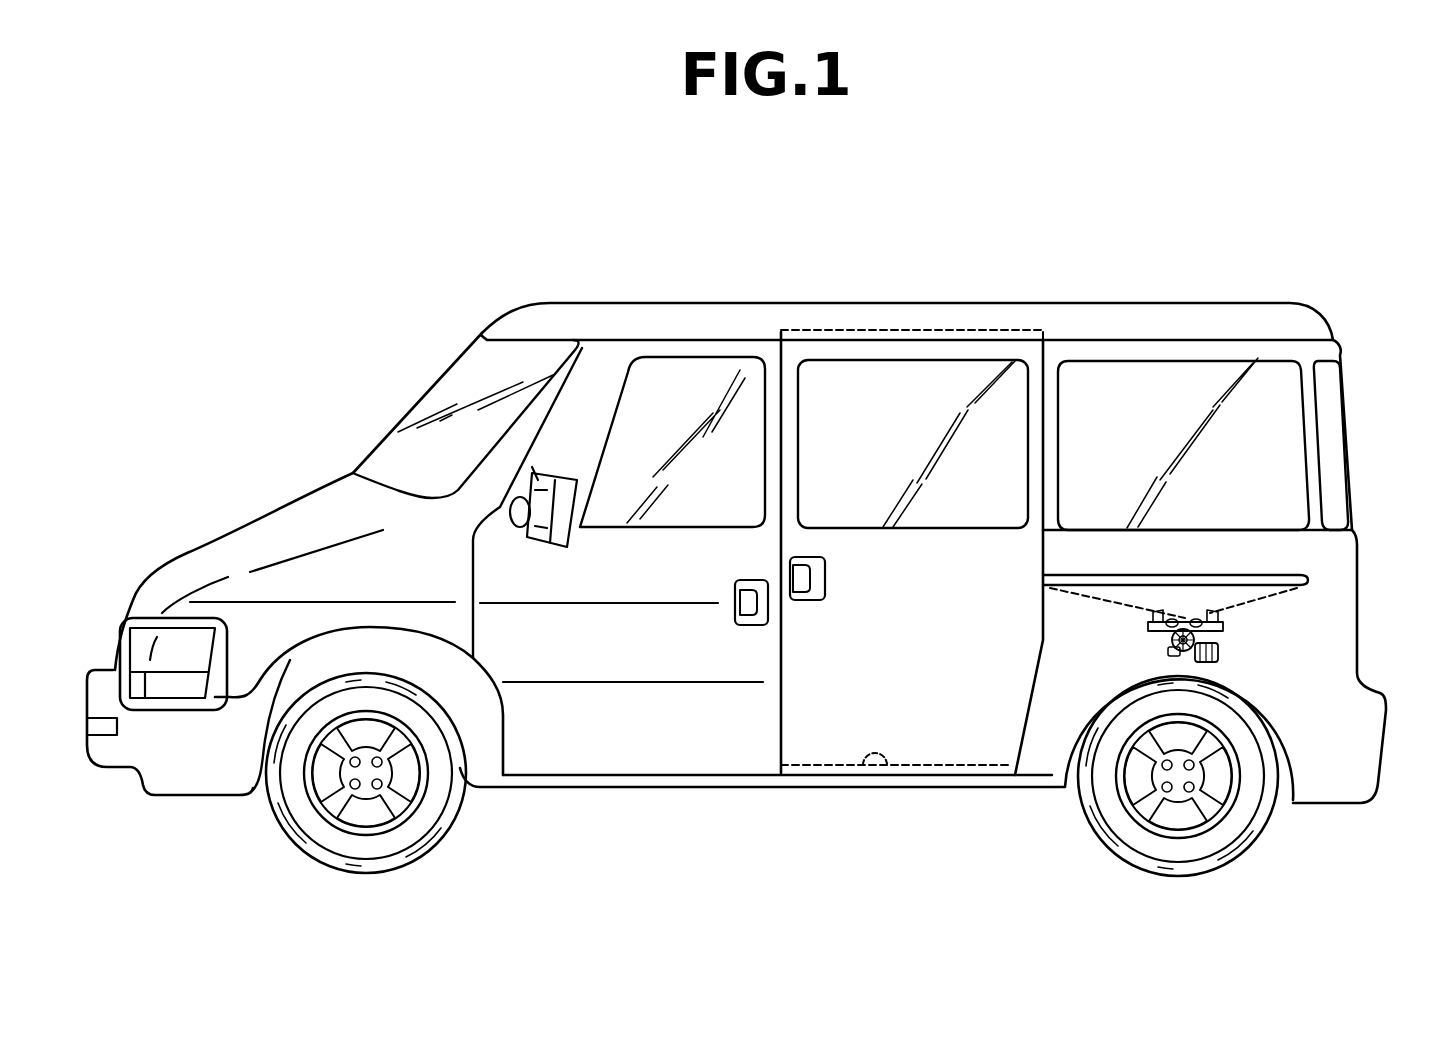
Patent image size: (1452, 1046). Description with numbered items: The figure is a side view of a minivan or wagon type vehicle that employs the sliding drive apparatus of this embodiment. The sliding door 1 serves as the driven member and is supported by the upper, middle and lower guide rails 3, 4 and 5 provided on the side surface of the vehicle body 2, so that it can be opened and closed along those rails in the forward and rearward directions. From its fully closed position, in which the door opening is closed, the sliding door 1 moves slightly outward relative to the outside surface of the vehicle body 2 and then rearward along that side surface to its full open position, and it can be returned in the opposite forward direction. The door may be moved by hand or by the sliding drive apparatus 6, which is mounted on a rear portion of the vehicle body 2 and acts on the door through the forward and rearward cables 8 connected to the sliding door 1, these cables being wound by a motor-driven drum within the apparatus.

The sliding door 1 is at (1047, 358).
The vehicle body 2 is at (698, 303).
The upper guide rail 3 is at (900, 330).
The middle guide rail 4 is at (1270, 574).
The lower guide rail 5 is at (885, 768).
The sliding drive apparatus 6 is at (1243, 626).
The cables 8 is at (1268, 596).